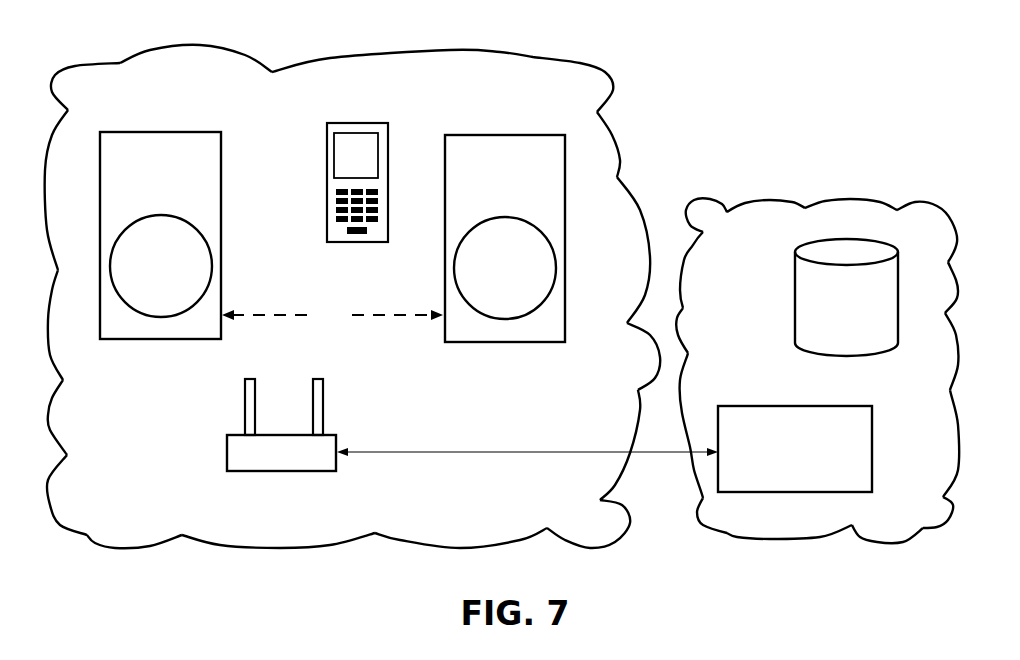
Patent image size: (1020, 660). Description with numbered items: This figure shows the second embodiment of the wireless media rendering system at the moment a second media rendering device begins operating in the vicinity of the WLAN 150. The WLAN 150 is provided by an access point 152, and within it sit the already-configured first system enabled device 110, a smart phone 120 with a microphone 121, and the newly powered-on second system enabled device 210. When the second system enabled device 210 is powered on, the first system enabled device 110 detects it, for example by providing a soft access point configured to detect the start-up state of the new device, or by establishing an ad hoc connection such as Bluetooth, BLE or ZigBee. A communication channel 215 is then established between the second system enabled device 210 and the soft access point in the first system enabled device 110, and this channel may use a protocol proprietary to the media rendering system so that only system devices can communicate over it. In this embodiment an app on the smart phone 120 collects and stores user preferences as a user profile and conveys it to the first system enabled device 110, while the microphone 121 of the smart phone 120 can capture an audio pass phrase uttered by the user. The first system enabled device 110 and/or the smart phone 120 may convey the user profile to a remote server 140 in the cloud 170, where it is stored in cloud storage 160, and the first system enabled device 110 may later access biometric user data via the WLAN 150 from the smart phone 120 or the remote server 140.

The first system enabled device 110 is at (142, 162).
The second system enabled device 210 is at (486, 164).
The smart phone 120 is at (332, 233).
The microphone 121 is at (357, 236).
The communication channel 215 is at (332, 315).
The access point 152 is at (263, 464).
The WLAN 150 is at (143, 531).
The cloud 170 is at (701, 346).
The cloud storage 160 is at (828, 316).
The remote server 140 is at (776, 461).